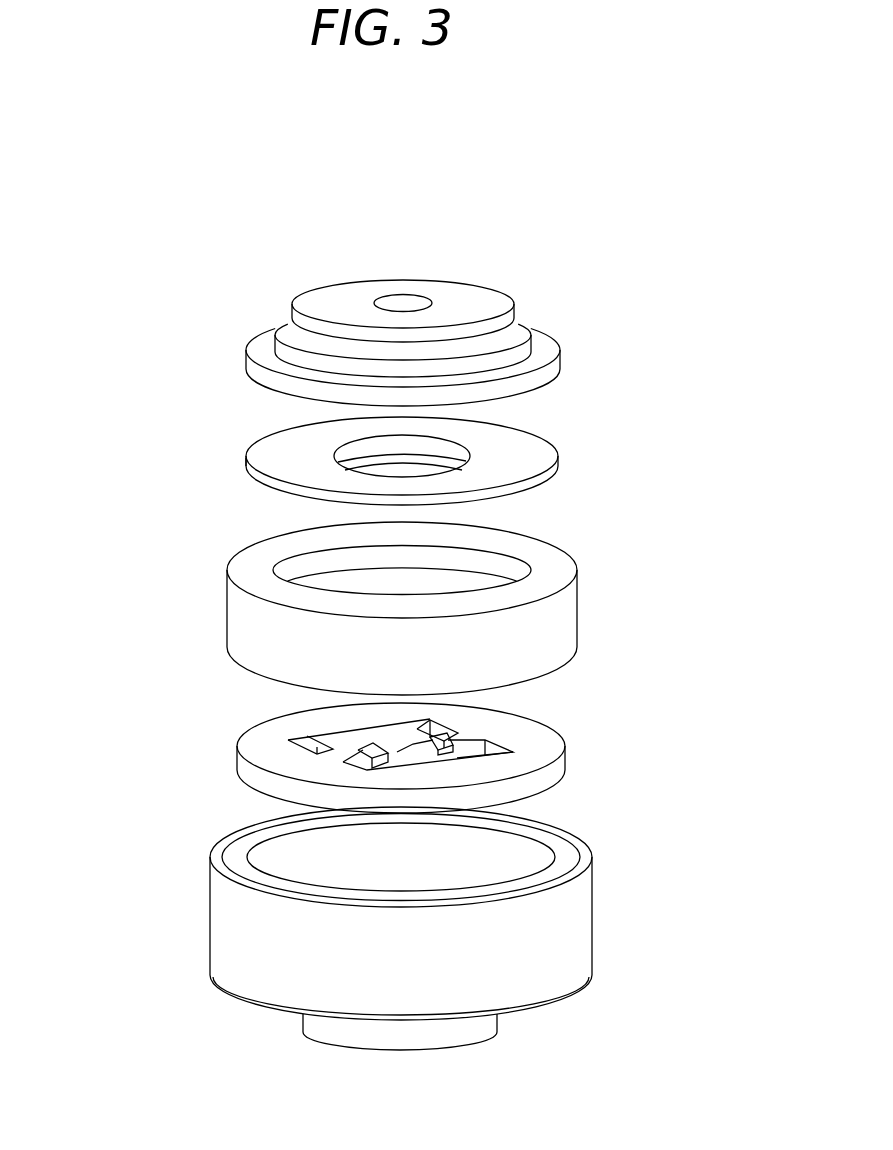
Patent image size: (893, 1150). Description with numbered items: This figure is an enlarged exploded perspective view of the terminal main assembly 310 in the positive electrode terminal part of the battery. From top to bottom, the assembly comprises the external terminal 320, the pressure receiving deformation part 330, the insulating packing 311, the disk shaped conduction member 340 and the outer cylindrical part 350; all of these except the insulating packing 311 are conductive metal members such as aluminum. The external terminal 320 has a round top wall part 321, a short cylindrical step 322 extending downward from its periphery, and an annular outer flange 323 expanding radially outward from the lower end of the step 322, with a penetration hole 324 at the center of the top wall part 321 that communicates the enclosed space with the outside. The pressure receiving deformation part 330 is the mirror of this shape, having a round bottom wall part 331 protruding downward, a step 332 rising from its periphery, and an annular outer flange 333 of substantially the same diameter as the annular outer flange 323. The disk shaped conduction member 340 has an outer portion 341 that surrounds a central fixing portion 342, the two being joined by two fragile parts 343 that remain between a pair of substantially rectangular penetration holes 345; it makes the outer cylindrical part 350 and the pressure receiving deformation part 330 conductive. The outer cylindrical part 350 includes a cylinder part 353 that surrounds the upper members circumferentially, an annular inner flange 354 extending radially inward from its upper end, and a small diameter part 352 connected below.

The terminal main assembly 310 is at (592, 185).
The insulating packing 311 is at (580, 615).
The external terminal 320 is at (245, 358).
The top wall part 321 is at (442, 292).
The step 322 is at (517, 320).
The annular outer flange 323 is at (553, 333).
The penetration hole 324 is at (403, 305).
The pressure receiving deformation part 330 is at (562, 462).
The bottom wall part 331 is at (402, 477).
The step 332 is at (458, 455).
The annular outer flange 333 is at (245, 462).
The disk shaped conduction member 340 is at (242, 776).
The outer portion 341 is at (565, 734).
The central fixing portion 342 is at (430, 719).
The fragile parts 343 is at (317, 745).
The penetration holes 345 is at (407, 768).
The outer cylindrical part 350 is at (593, 920).
The small diameter part 352 is at (302, 1020).
The cylinder part 353 is at (208, 932).
The annular inner flange 354 is at (233, 855).